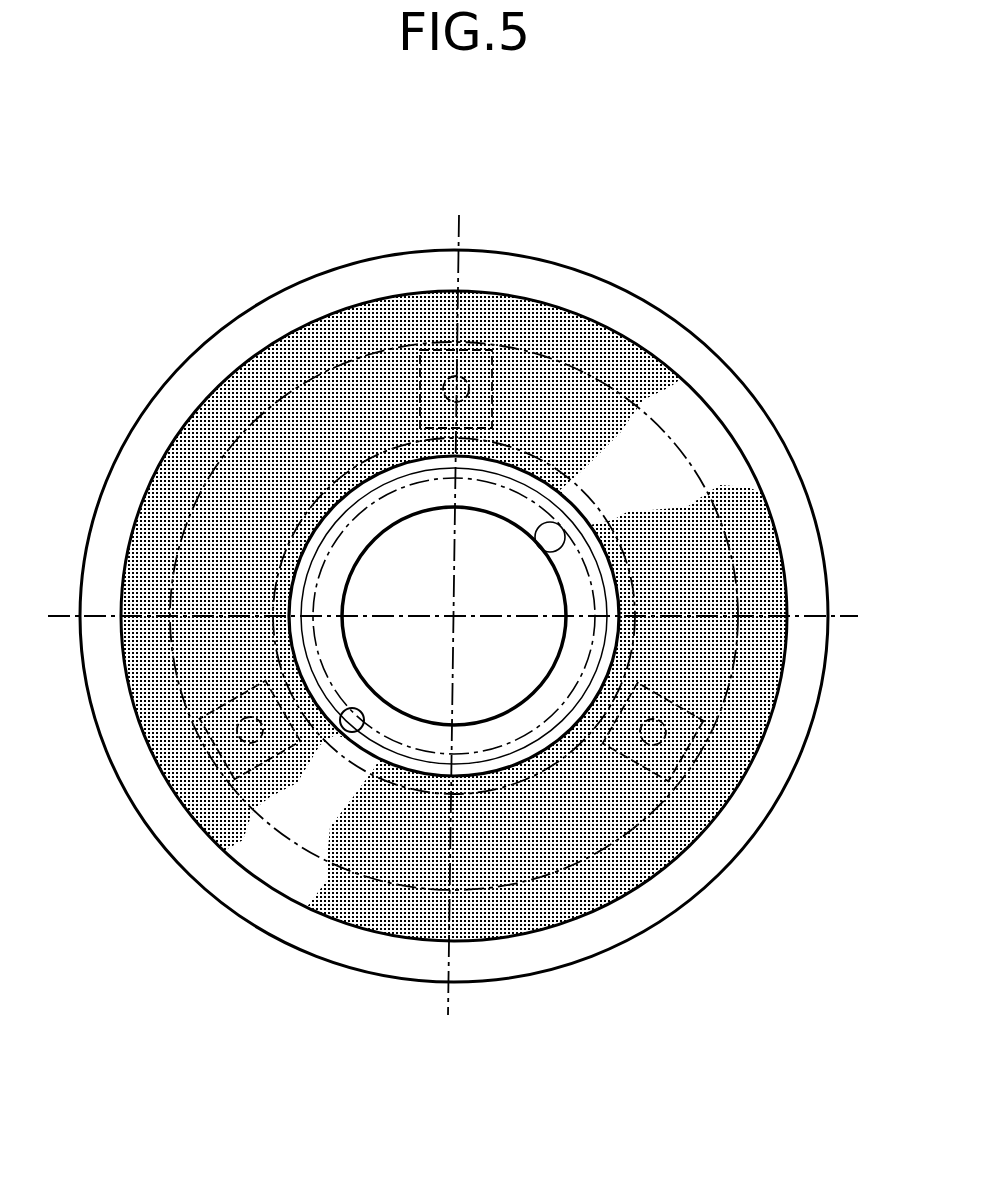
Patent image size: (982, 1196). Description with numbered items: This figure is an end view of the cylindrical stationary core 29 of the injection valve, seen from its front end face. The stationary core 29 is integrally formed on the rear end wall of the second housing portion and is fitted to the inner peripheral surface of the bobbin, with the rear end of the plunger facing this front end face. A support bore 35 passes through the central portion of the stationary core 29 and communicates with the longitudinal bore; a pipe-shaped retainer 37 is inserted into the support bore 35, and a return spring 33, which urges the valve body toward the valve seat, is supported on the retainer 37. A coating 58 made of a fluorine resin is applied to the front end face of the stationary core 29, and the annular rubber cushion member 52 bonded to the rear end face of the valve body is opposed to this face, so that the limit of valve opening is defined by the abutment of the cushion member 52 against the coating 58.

The stationary core 29 is at (222, 343).
The coating 58 is at (602, 348).
The cushion member 52 is at (680, 450).
The return spring 33 is at (543, 538).
The retainer 37 is at (345, 677).
The support bore 35 is at (358, 733).